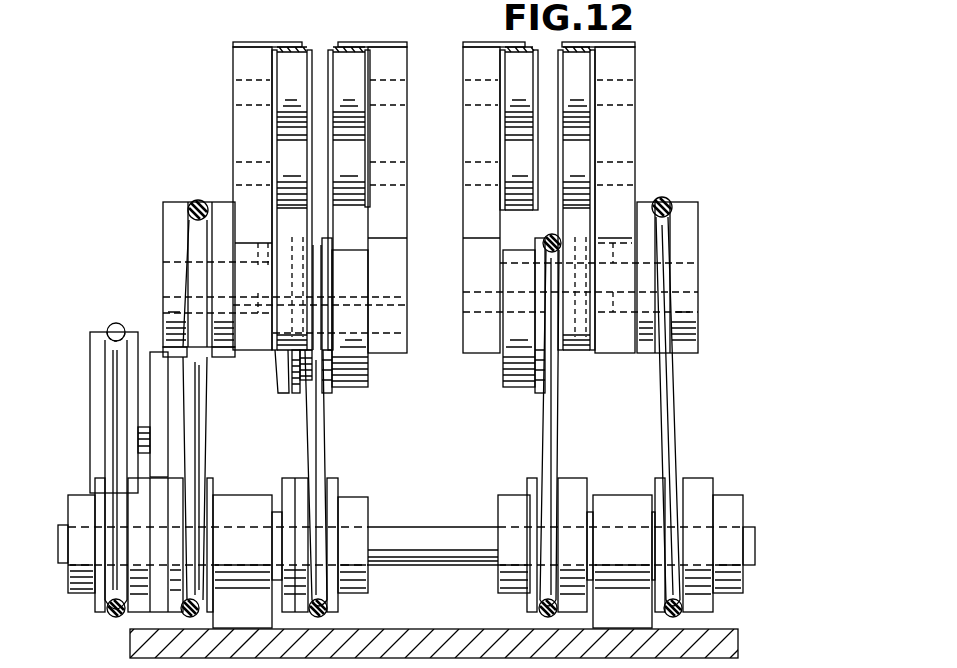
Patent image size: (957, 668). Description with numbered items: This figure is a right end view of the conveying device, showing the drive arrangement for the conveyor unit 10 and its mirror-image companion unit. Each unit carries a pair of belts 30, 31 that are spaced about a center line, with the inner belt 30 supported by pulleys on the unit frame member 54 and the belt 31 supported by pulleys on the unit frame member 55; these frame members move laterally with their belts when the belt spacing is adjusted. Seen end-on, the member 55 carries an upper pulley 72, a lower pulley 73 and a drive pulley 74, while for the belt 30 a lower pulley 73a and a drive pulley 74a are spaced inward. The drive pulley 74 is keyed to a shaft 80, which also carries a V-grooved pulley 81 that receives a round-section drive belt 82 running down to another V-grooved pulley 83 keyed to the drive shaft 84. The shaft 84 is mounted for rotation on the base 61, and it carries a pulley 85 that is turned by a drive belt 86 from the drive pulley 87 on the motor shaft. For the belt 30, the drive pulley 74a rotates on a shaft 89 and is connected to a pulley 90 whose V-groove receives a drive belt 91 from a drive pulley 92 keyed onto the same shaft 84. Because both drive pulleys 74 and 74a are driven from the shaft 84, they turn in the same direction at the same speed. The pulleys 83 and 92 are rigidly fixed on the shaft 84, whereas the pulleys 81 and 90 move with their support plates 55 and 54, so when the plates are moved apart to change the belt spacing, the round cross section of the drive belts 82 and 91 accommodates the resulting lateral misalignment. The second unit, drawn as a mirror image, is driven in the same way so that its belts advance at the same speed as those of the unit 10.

The conveyor unit 10 is at (392, 38).
The belt 30 is at (335, 50).
The belt 31 is at (307, 47).
The unit frame member 54 is at (392, 345).
The unit frame member 55 is at (247, 350).
The base 61 is at (437, 635).
The upper pulley 72 is at (285, 92).
The lower pulley 73 is at (287, 172).
The lower pulley 73a is at (348, 178).
The drive pulley 74 is at (283, 360).
The drive pulley 74a is at (367, 380).
The shaft 80 is at (267, 243).
The pulley 81 is at (222, 208).
The drive belt 82 is at (207, 427).
The pulley 83 is at (208, 483).
The drive shaft 84 is at (442, 533).
The pulley 85 is at (102, 490).
The drive belt 86 is at (116, 323).
The drive pulley 87 is at (92, 365).
The shaft 89 is at (377, 303).
The pulley 90 is at (325, 395).
The drive belt 91 is at (327, 455).
The drive pulley 92 is at (362, 503).